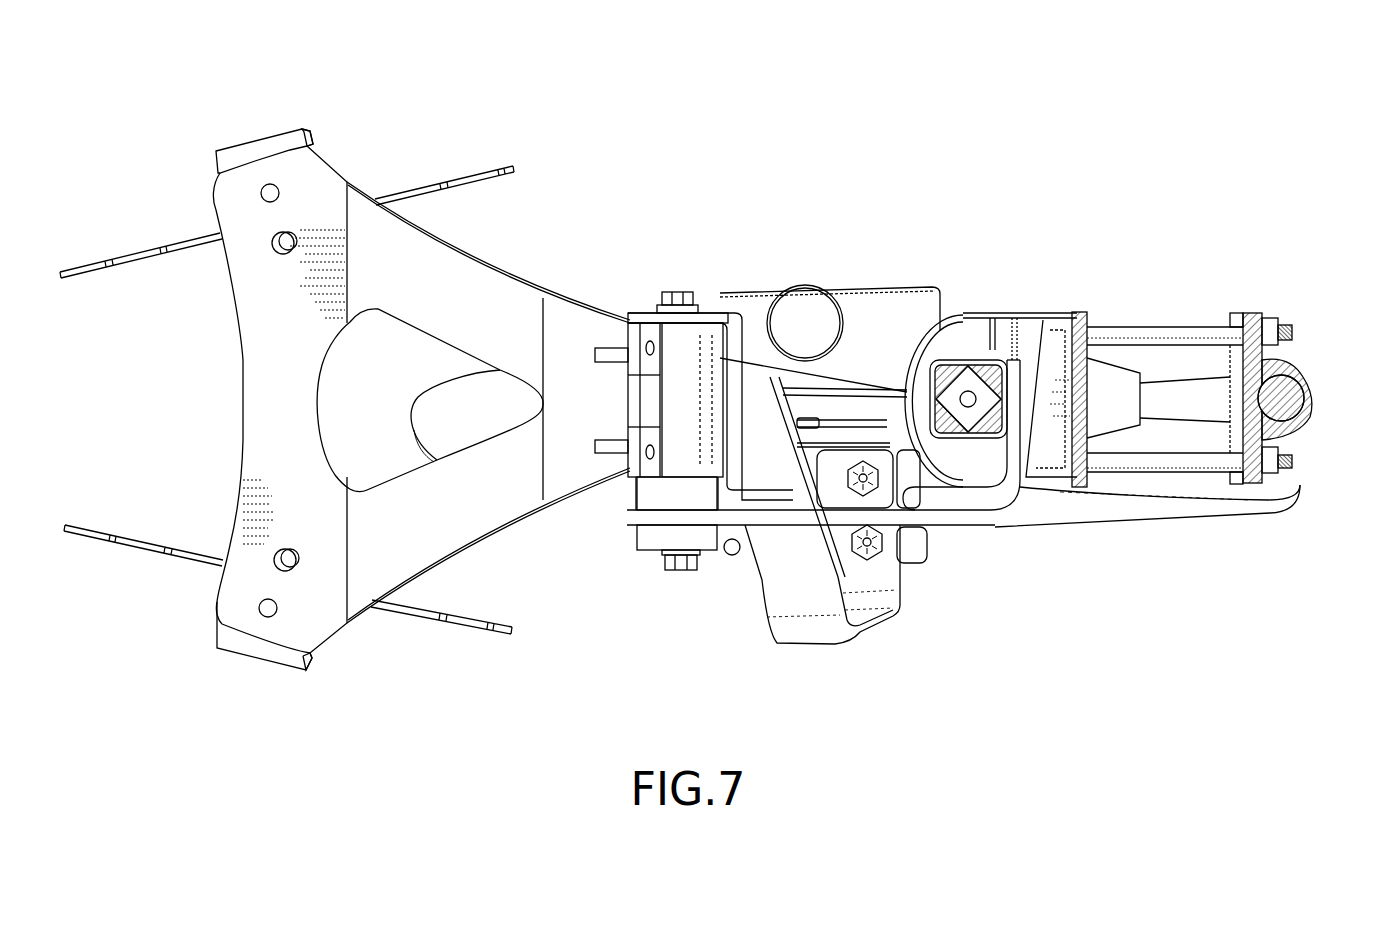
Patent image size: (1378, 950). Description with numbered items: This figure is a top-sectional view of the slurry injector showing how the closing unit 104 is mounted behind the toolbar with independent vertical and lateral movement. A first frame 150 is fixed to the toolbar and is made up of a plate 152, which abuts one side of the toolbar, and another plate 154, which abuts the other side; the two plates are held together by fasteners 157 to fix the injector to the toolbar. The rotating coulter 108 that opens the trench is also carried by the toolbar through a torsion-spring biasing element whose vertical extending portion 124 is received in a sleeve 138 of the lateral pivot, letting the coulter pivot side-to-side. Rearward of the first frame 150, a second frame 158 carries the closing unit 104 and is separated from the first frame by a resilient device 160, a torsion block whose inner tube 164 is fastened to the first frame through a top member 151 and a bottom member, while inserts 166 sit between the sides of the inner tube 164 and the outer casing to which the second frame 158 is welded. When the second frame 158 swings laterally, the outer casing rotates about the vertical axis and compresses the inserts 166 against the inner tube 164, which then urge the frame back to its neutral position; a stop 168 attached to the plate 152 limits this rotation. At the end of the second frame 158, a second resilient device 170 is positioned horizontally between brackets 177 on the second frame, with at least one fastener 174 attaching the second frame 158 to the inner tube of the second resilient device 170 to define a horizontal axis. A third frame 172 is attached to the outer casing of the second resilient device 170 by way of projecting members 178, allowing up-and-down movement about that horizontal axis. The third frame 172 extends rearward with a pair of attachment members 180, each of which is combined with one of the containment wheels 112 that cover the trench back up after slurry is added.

The closing unit 104 is at (385, 148).
The rotating coulter 108 is at (860, 390).
The containment wheels 112 is at (143, 253).
The vertical extending portion 124 is at (1280, 400).
The sleeve 138 is at (1306, 378).
The first frame 150 is at (1128, 306).
The top member 151 is at (990, 380).
The plate 152 is at (1082, 325).
The plate 154 is at (1250, 325).
The fasteners 157 is at (1148, 334).
The second frame 158 is at (932, 518).
The resilient device 160 is at (948, 346).
The inner tube 164 is at (985, 427).
The inserts 166 is at (1018, 422).
The stop 168 is at (1058, 455).
The second resilient device 170 is at (692, 342).
The third frame 172 is at (500, 305).
The fastener 174 is at (681, 294).
The brackets 177 is at (650, 318).
The projecting members 178 is at (652, 465).
The attachment members 180 is at (262, 146).